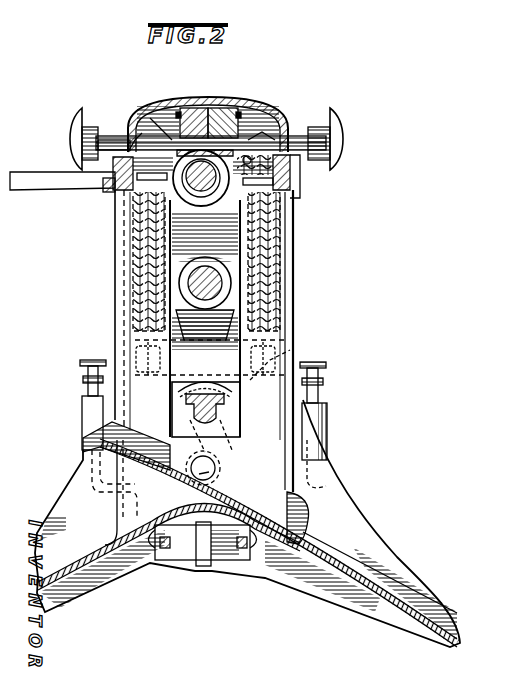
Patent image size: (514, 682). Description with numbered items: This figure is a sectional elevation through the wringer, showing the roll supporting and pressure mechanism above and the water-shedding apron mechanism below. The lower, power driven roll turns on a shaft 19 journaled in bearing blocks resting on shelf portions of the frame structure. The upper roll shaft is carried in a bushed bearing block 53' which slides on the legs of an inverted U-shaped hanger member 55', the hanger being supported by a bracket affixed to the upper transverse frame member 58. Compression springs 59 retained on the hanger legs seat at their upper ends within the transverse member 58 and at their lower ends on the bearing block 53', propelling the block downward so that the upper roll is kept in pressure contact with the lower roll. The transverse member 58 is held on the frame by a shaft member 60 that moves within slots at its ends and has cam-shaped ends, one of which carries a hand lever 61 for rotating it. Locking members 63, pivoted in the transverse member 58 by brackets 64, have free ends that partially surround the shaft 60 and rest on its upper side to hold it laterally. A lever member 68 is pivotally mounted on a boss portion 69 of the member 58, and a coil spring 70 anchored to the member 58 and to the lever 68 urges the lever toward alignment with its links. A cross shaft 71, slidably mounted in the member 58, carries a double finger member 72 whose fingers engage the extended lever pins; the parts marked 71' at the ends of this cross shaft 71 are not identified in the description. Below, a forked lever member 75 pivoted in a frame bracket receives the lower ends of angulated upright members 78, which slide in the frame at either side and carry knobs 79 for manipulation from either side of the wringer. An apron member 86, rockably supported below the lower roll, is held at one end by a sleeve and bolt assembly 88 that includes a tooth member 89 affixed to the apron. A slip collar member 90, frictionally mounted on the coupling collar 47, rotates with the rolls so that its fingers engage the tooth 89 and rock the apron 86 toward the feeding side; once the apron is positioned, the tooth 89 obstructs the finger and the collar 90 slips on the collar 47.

The shaft 19 is at (268, 416).
The coupling collar 47 is at (226, 417).
The bushed bearing block 53' is at (259, 298).
The inverted U-shaped hanger member 55' is at (236, 346).
The upper transverse frame member 58 is at (250, 104).
The compression springs 59 is at (132, 238).
The shaft member 60 is at (174, 192).
The hand lever 61 is at (34, 180).
The locking members 63 is at (262, 132).
The brackets 64 is at (244, 157).
The lever member 68 is at (224, 112).
The boss portion 69 is at (204, 120).
The coil spring 70 is at (150, 118).
The cross shaft 71 is at (114, 118).
The knob 71' is at (197, 139).
The double finger member 72 is at (148, 135).
The forked lever member 75 is at (213, 552).
The angulated upright members 78 is at (86, 394).
The knobs 79 is at (86, 362).
The apron member 86 is at (304, 506).
The sleeve and bolt assembly 88 is at (200, 482).
The tooth member 89 is at (214, 470).
The slip collar member 90 is at (286, 360).